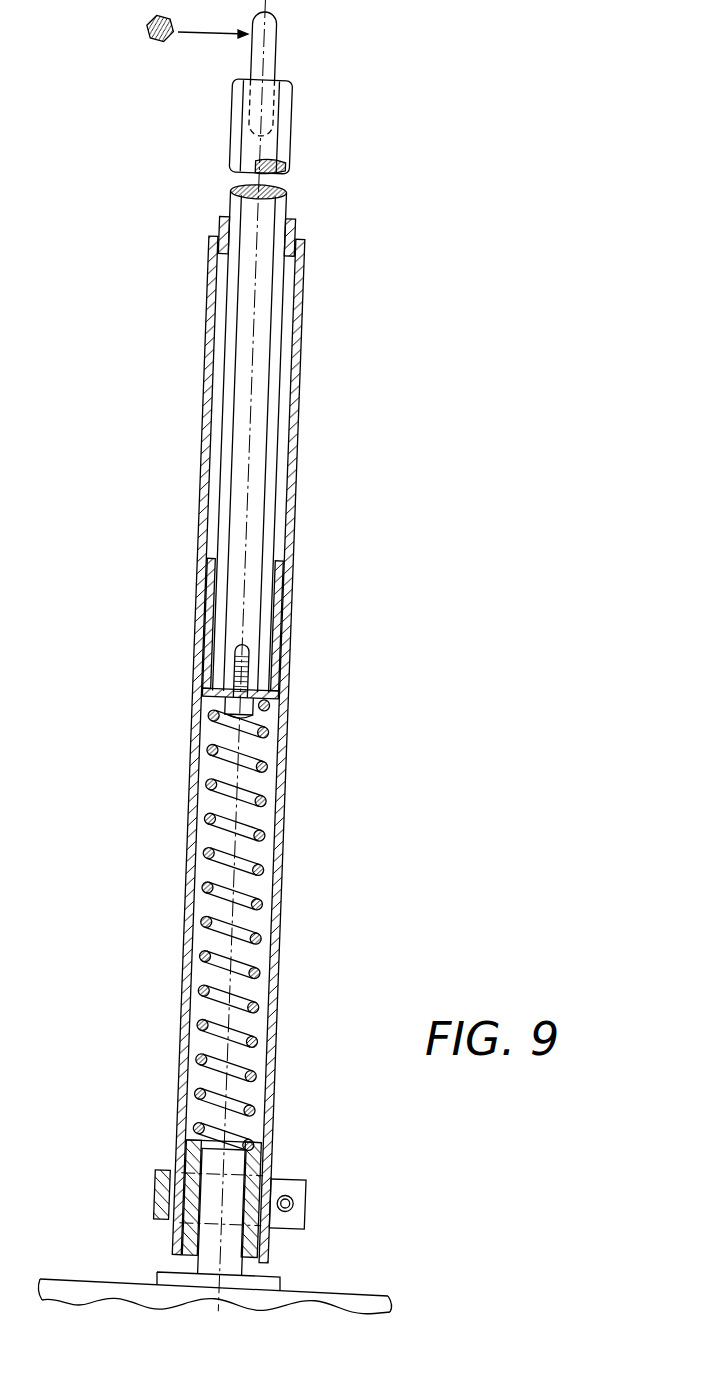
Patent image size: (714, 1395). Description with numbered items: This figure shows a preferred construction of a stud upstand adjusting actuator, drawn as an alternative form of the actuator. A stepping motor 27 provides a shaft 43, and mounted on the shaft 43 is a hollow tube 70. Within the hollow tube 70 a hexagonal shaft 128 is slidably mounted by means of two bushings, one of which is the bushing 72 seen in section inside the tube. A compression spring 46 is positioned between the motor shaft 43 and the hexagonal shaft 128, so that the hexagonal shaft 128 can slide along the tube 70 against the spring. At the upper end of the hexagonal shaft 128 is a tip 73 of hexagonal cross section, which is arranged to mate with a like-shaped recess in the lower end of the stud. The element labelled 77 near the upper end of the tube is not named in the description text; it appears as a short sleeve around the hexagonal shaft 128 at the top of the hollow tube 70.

The tip 73 is at (267, 48).
The hexagonal shaft 128 is at (290, 137).
The bushing 77 is at (297, 231).
The bushing 72 is at (280, 550).
The compression spring 46 is at (263, 768).
The hollow tube 70 is at (283, 884).
The shaft 43 is at (230, 1252).
The stepping motor 27 is at (340, 1297).